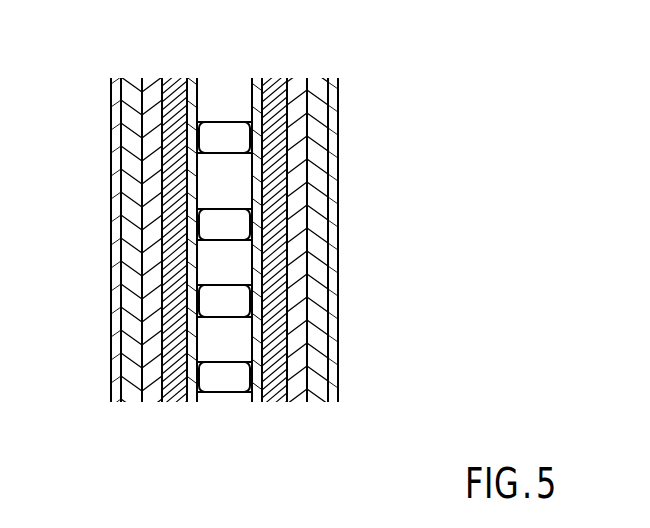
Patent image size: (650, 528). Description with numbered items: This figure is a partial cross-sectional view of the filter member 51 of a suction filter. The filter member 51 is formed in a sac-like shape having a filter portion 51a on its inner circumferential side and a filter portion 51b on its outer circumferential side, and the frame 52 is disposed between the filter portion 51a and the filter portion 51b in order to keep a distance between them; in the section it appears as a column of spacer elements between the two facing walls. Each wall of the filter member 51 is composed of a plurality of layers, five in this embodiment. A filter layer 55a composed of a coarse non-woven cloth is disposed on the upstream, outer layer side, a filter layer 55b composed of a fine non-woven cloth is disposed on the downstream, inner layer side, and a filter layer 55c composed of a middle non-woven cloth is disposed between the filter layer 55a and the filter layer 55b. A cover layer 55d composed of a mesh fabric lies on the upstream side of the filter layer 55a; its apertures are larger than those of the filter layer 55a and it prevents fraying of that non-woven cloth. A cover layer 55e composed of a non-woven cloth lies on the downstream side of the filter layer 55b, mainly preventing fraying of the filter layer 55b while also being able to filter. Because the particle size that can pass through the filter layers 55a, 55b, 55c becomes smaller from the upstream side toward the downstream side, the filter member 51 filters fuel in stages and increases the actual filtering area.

The filter member 51 is at (367, 75).
The filter portion 51a is at (152, 68).
The filter portion 51b is at (296, 72).
The frame 52 is at (221, 88).
The filter layer 55a is at (130, 397).
The filter layer 55b is at (173, 398).
The filter layer 55c is at (153, 395).
The cover layer 55d is at (120, 376).
The cover layer 55e is at (192, 393).